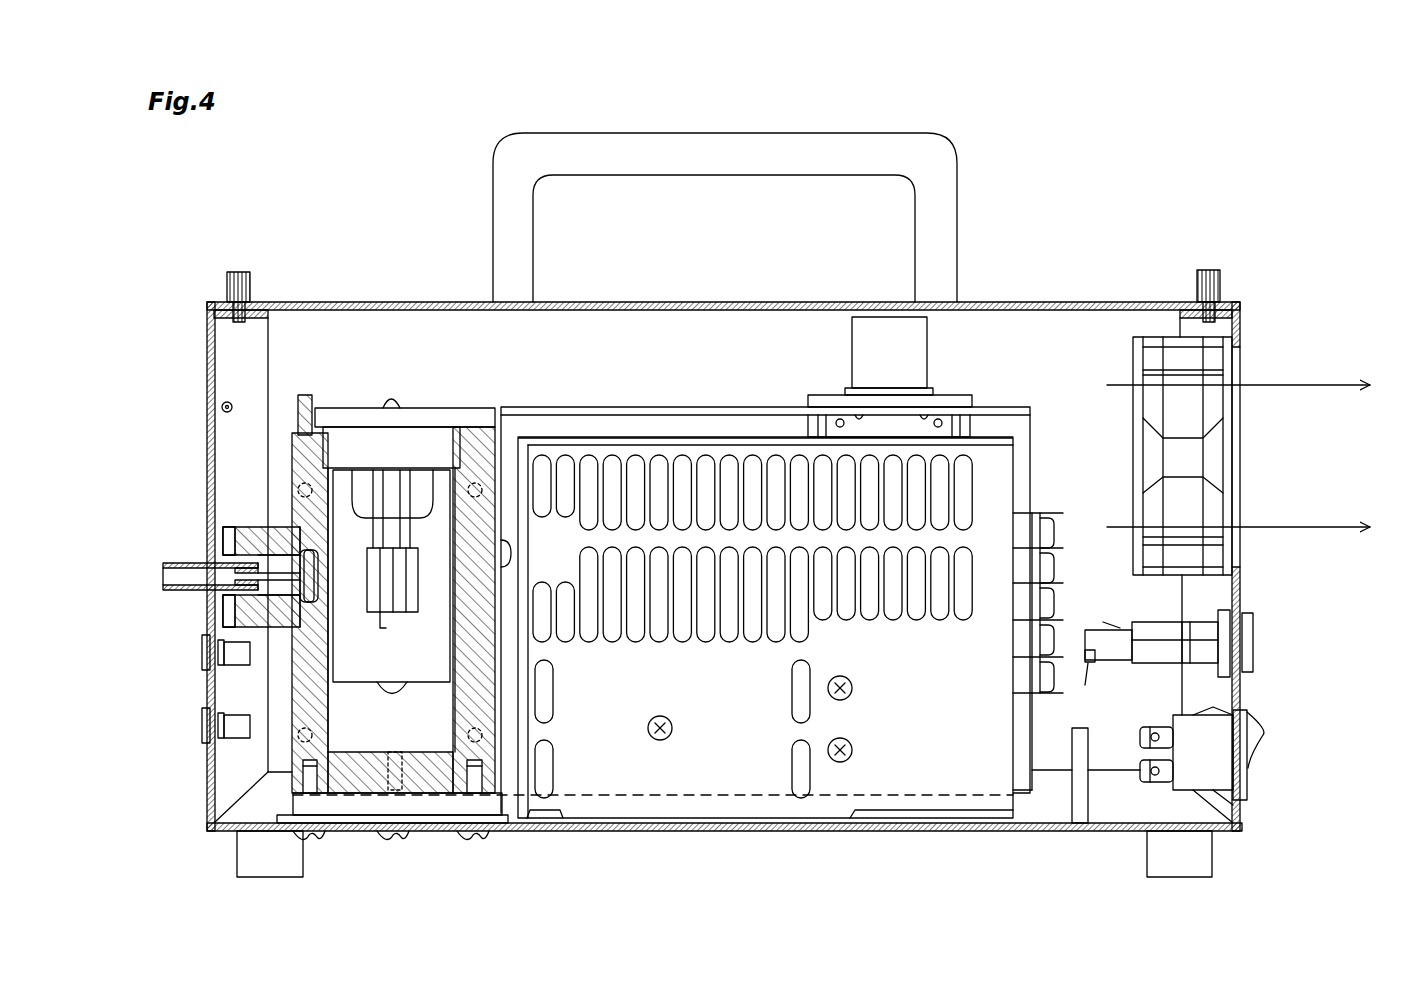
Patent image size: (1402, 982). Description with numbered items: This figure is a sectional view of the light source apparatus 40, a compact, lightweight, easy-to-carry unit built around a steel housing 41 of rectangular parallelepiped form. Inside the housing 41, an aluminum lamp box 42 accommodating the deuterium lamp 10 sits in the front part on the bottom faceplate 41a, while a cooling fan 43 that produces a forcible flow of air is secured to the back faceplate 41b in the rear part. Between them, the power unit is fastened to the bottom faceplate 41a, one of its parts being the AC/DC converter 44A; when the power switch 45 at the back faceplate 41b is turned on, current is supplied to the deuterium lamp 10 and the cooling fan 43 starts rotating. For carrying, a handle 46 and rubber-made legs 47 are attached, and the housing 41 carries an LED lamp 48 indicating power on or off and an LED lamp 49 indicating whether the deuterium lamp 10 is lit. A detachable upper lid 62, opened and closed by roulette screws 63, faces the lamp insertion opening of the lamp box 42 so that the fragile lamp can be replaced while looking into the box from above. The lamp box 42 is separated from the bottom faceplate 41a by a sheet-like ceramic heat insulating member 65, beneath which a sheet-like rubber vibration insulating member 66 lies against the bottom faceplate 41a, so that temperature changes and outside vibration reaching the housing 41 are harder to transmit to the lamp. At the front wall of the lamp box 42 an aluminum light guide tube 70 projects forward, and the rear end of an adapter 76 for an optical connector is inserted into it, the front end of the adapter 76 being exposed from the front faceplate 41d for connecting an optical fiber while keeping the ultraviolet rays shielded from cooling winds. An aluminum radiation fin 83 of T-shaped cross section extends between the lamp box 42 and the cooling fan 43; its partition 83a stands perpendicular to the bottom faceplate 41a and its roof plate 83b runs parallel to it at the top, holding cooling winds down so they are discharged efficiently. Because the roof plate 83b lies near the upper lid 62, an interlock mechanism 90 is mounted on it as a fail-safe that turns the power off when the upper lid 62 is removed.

The light source apparatus 40 is at (1168, 180).
The housing 41 is at (1247, 580).
The bottom faceplate 41a is at (730, 830).
The back faceplate 41b is at (1240, 320).
The front faceplate 41d is at (208, 360).
The lamp box 42 is at (495, 452).
The cooling fan 43 is at (1197, 405).
The AC/DC converter 44A is at (612, 763).
The power switch 45 is at (1255, 730).
The handle 46 is at (893, 137).
The rubber-made legs 47 is at (240, 858).
The LED lamp 48 is at (202, 642).
The LED lamp 49 is at (202, 715).
The deuterium lamp 10 is at (430, 415).
The upper lid 62 is at (747, 302).
The roulette screws 63 is at (248, 284).
The heat insulating member 65 is at (357, 808).
The vibration insulating member 66 is at (442, 817).
The light guide tube 70 is at (243, 527).
The adapter 76 is at (182, 558).
The radiation fin 83 is at (1030, 440).
The partition 83a is at (687, 423).
The roof plate 83b is at (777, 405).
The interlock mechanism 90 is at (927, 335).